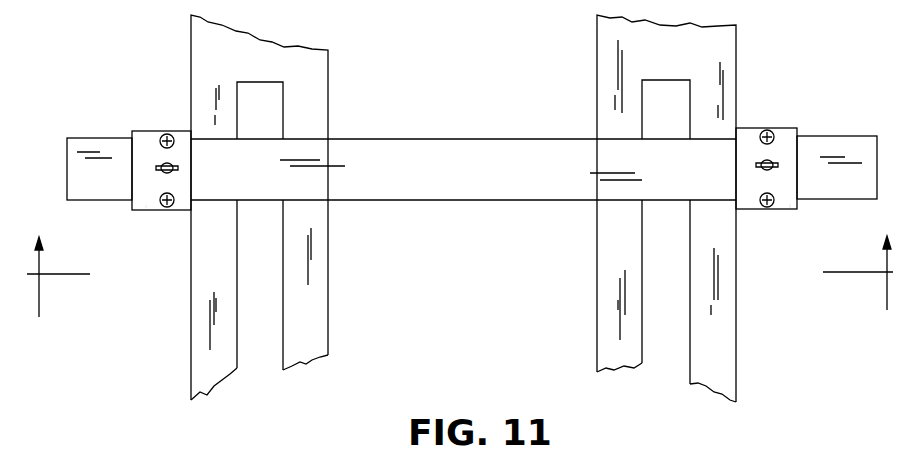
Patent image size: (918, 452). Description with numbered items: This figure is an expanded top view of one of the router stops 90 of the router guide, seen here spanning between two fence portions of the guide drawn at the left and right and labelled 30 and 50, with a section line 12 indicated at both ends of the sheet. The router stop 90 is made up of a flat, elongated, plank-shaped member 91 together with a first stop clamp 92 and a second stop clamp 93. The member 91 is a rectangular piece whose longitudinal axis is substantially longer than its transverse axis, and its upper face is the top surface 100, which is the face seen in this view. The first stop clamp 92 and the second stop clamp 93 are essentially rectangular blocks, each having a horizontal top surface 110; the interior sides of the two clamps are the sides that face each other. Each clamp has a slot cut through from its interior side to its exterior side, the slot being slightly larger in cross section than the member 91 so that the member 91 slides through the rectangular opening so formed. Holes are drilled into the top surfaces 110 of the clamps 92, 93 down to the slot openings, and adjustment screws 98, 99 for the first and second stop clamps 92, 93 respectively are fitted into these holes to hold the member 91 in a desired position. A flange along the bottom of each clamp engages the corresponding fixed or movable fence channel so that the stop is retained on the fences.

The section line 12- 12 is at (461, 292).
The first post 30 is at (315, 95).
The second post 50 is at (727, 44).
The router stop 90 is at (852, 113).
The plank-shaped member 91 is at (395, 153).
The first stop clamp 92 is at (143, 131).
The second stop clamp 93 is at (752, 127).
The adjustment screw 98 is at (179, 167).
The adjustment screw 99 is at (756, 166).
The top surface 100 is at (500, 184).
The horizontal top surface 110 is at (146, 200).